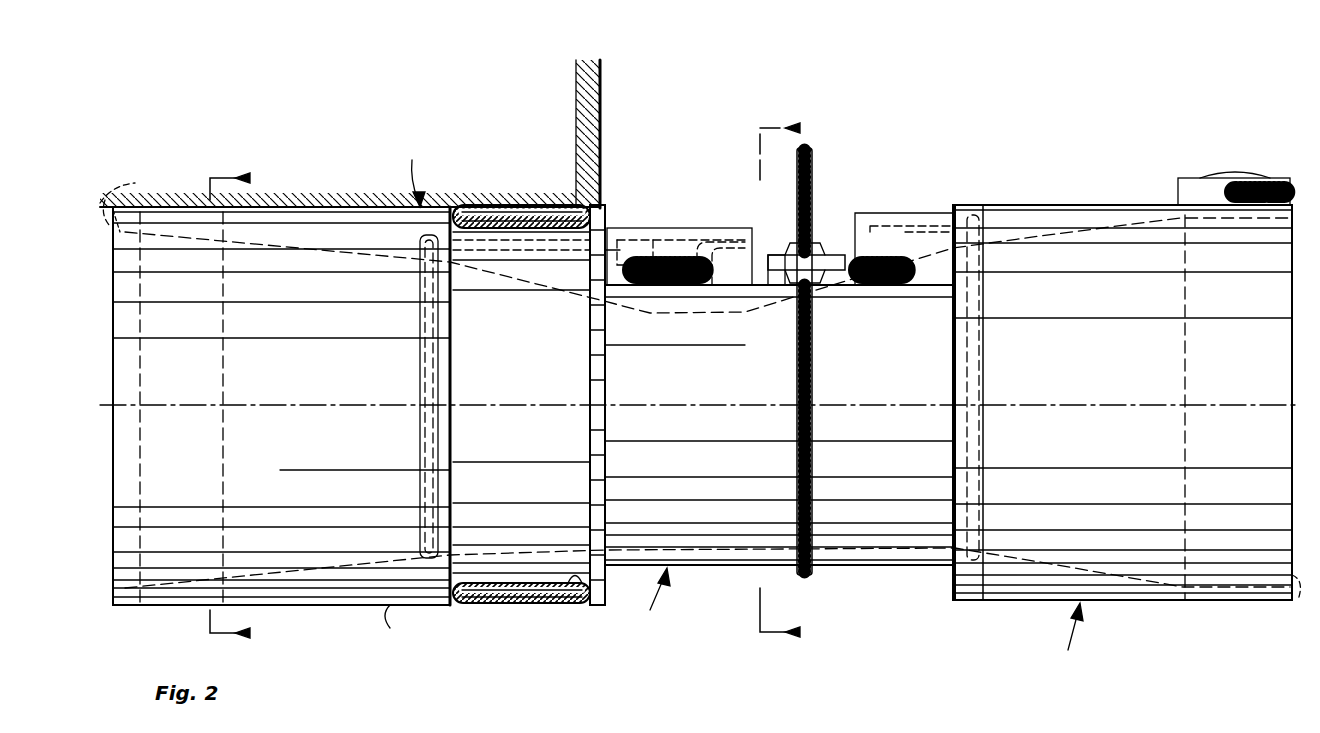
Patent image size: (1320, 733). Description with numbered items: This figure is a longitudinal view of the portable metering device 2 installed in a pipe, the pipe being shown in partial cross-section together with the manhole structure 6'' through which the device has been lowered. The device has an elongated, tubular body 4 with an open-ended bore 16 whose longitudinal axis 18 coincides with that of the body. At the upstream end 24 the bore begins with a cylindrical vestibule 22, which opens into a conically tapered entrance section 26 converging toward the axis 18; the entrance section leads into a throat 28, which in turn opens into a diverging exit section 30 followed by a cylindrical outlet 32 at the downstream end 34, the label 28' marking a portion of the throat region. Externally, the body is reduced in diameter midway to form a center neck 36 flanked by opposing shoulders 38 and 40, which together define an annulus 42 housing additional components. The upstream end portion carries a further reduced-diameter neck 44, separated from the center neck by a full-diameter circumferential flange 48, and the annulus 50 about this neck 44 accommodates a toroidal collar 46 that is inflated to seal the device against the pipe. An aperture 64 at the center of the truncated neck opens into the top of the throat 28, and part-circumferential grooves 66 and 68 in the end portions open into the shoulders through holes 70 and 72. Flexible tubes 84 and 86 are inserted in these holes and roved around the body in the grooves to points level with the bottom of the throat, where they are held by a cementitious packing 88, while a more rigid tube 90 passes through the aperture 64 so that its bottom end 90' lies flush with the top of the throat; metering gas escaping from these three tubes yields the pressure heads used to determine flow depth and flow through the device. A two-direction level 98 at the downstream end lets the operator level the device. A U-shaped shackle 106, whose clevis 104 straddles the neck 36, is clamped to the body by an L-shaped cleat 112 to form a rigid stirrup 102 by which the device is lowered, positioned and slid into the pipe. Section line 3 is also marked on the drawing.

The portable metering device 2 is at (1055, 134).
The wall / support structure 6'' is at (383, 134).
The bore 16 is at (281, 406).
The longitudinal axis of the bore 18 is at (765, 405).
The cylindrical vestibule 22 is at (170, 235).
The upstream end 24 is at (122, 192).
The entrance section 26 is at (340, 245).
The throat 28 is at (780, 425).
The tubular section portion 28' is at (754, 337).
The exit section 30 is at (1078, 240).
The cylindrical outlet 32 is at (1258, 222).
The downstream end 34 is at (1298, 600).
The center neck 36 is at (705, 567).
The upstream shoulder 38 is at (605, 250).
The downstream shoulder 40 is at (955, 355).
The annulus 42 is at (874, 578).
The reduced diameter neck 44 is at (572, 600).
The toroidal collar 46 is at (497, 600).
The circumferential flange 48 is at (605, 465).
The annulus about the larger neck 50 is at (572, 205).
The aperture 64 is at (690, 287).
The part circumferential groove 66 is at (425, 308).
The part circumferential groove 68 is at (970, 215).
The hole 70 is at (486, 225).
The hole 72 is at (943, 226).
The flexible tube 84 is at (662, 240).
The flexible tube 86 is at (893, 226).
The cementitious packing 88 is at (983, 465).
The rigid tube 90 is at (722, 228).
The bottom end of rigid tube 90' is at (707, 337).
The two-direction level 98 is at (1238, 178).
The rigid stirrup 102 is at (817, 175).
The clevis 104 is at (812, 465).
The U-shaped shackle 106 is at (815, 418).
The L-shaped cleat 112 is at (785, 255).
The section line 3- 3 is at (237, 409).
The body 4 is at (734, 395).